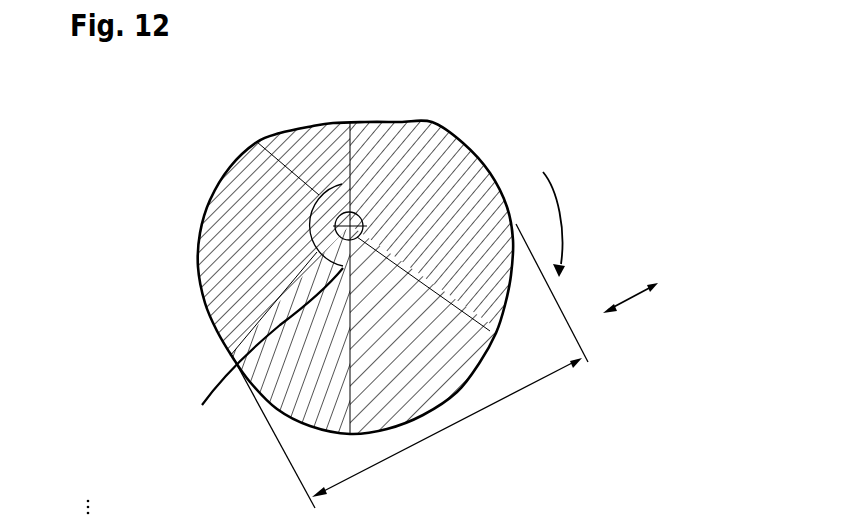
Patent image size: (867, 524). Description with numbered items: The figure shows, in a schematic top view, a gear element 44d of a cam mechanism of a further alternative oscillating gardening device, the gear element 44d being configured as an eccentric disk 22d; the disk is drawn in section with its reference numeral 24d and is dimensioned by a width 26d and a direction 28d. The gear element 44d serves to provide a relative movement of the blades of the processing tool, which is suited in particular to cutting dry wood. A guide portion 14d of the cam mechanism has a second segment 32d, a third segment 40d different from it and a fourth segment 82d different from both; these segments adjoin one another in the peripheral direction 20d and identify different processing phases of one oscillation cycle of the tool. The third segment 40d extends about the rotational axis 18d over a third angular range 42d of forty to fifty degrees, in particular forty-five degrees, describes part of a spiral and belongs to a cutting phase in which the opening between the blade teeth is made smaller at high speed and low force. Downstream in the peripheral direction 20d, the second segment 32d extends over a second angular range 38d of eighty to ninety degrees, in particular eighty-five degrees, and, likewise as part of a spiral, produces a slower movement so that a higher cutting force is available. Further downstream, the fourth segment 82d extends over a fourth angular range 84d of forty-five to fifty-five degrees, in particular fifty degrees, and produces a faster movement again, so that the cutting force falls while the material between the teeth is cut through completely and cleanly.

The guide portion 14d is at (301, 277).
The rotor body 24d is at (217, 179).
The rotational axis 18d is at (367, 226).
The peripheral direction 20d is at (562, 217).
The eccentric disk 22d is at (480, 283).
The gear element 44d is at (480, 164).
The width 26d is at (462, 422).
The direction 28d is at (632, 302).
The second segment 32d is at (180, 262).
The second angular range 38d is at (307, 227).
The third segment 40d is at (288, 110).
The third angular range 42d is at (340, 186).
The fourth segment 82d is at (242, 414).
The fourth angular range 84d is at (254, 350).